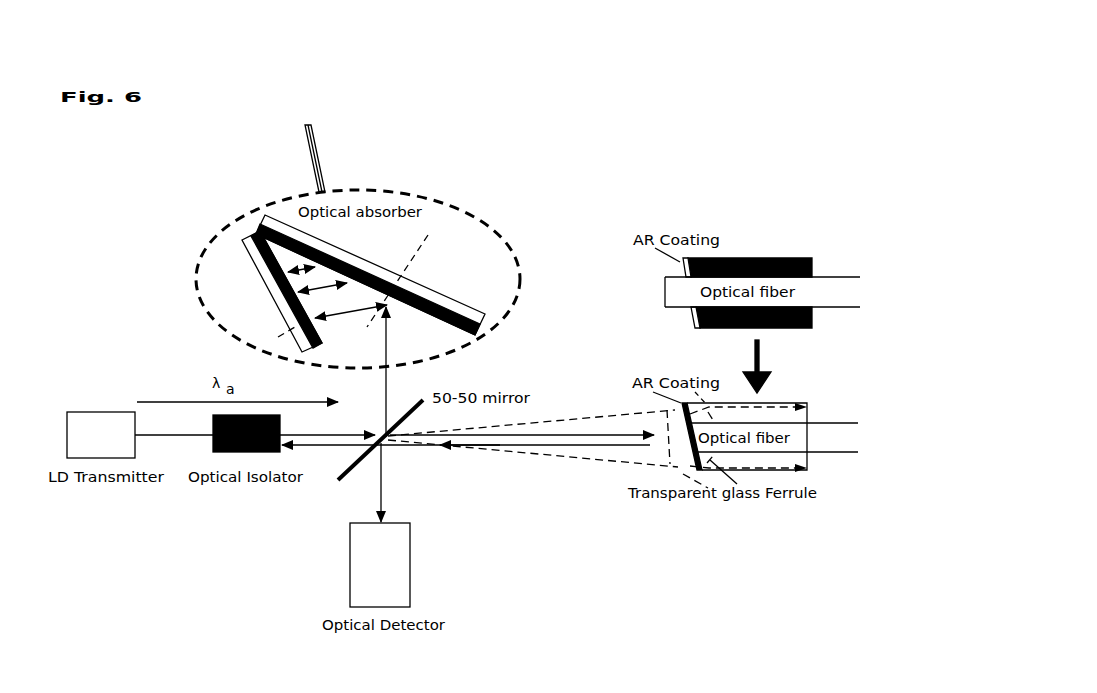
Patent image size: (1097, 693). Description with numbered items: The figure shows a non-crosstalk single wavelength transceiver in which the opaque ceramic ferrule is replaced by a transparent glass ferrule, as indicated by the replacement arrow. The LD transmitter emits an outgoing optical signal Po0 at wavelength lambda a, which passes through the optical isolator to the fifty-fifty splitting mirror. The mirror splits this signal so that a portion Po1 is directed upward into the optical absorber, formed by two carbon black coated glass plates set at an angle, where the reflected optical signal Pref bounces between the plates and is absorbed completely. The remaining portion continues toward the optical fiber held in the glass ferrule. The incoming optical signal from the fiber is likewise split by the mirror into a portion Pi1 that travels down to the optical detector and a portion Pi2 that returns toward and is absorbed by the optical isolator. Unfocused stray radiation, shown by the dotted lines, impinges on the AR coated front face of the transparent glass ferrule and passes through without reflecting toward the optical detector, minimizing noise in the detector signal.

The optical signal transmitted from the LD Transmitter Po0 is at (467, 424).
The split outgoing optical signal Po1 is at (370, 372).
The split incoming optical signal to optical detector Pi1 is at (395, 482).
The split incoming optical signal to optical isolator Pi2 is at (466, 455).
The reflected optical signal Pref is at (351, 306).